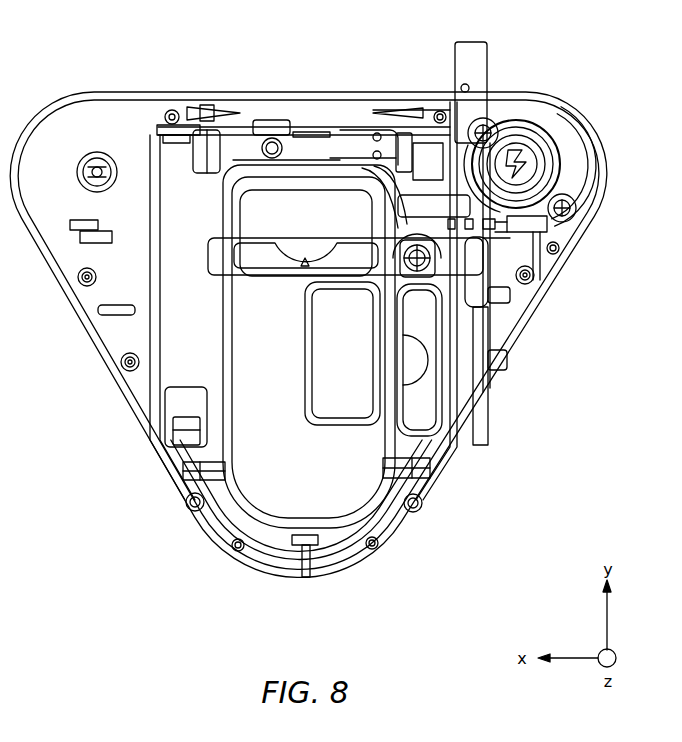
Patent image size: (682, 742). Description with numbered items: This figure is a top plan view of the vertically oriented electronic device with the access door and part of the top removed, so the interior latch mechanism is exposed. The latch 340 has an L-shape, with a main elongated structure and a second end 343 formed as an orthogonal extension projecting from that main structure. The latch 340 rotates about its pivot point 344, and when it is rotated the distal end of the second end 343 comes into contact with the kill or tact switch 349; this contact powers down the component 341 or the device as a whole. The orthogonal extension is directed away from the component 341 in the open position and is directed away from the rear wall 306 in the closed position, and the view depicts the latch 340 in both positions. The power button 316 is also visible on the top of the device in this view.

The rear wall 306 is at (124, 93).
The power button 316 is at (528, 143).
The latch 340 is at (396, 333).
The component 341 is at (273, 503).
The second end 343 is at (427, 205).
The pivot point 344 is at (402, 225).
The kill or tact switch 349 is at (535, 218).